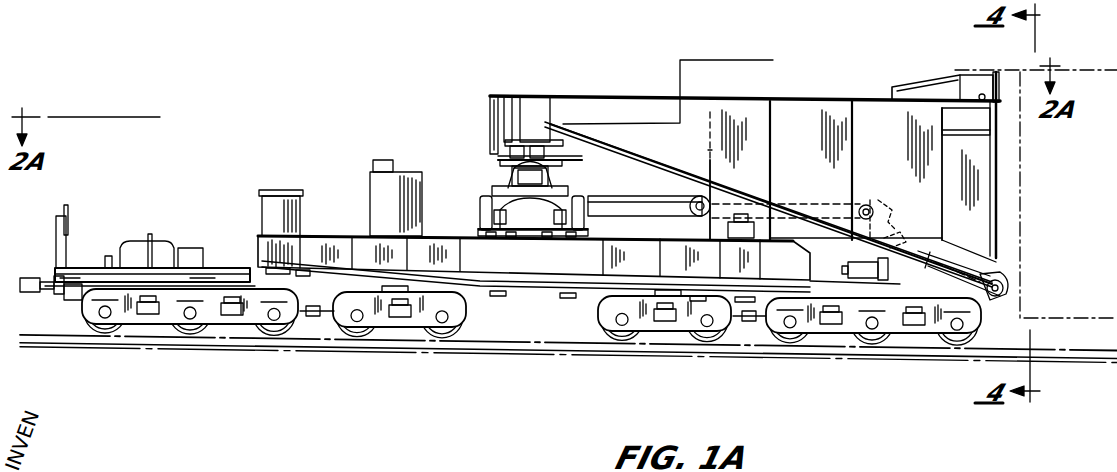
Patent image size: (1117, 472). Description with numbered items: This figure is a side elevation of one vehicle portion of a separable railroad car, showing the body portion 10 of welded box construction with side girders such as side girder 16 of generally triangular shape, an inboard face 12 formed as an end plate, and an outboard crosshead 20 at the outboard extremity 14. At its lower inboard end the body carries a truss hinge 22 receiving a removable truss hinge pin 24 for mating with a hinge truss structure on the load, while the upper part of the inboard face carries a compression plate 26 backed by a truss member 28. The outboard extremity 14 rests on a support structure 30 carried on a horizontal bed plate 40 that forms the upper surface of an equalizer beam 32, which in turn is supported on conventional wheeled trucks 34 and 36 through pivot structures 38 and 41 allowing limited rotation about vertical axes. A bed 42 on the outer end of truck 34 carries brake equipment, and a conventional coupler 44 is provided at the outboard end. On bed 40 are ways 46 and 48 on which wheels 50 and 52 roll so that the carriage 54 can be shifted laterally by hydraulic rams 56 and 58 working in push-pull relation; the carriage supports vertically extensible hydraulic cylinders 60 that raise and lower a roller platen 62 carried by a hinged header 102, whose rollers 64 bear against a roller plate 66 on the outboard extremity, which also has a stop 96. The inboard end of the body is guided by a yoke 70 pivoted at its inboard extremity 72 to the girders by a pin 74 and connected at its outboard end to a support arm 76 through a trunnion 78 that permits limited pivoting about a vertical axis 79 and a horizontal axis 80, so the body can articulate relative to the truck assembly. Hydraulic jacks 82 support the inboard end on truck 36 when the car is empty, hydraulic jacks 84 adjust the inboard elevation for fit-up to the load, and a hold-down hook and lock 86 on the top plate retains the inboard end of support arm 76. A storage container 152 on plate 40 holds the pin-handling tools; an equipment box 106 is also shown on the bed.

The body portion 10 is at (814, 92).
The inboard face 12 is at (1000, 168).
The outboard extremity 14 is at (530, 96).
The side girder 16 is at (655, 108).
The outboard crosshead 20 is at (556, 122).
The truss hinge 22 is at (1000, 278).
The truss hinge pin 24 is at (1004, 286).
The compression plate 26 is at (996, 88).
The truss member 28 is at (936, 78).
The support structure 30 is at (560, 190).
The equalizer beam 32 is at (527, 288).
The wheeled truck 34 is at (238, 322).
The wheeled truck 36 is at (798, 328).
The pivot structure 38 is at (280, 270).
The bed plate 40 is at (316, 236).
The pivot structure 41 is at (814, 282).
The bed 42 is at (90, 266).
The coupler 44 is at (28, 277).
The way 46 is at (492, 238).
The way 48 is at (572, 238).
The wheel 50 is at (484, 214).
The wheel 52 is at (578, 216).
The carriage 54 is at (508, 190).
The hydraulic ram 56 is at (510, 238).
The hydraulic ram 58 is at (546, 238).
The hydraulic cylinder 60 is at (552, 172).
The roller platen 62 is at (582, 141).
The roller 64 is at (533, 140).
The roller plate 66 is at (560, 124).
The yoke 70 is at (790, 204).
The inboard extremity of yoke 72 is at (870, 200).
The pin 74 is at (858, 210).
The support arm 76 is at (674, 196).
The trunnion 78 is at (714, 190).
The vertical axis 79 is at (708, 158).
The horizontal axis 80 is at (690, 210).
The hydraulic jack 82 is at (882, 236).
The hydraulic jack 84 is at (896, 240).
The hold-down hook and lock 86 is at (738, 214).
The stop 96 is at (492, 118).
The hinged header 102 is at (512, 162).
The equipment box 106 is at (402, 182).
The storage container 152 is at (284, 200).